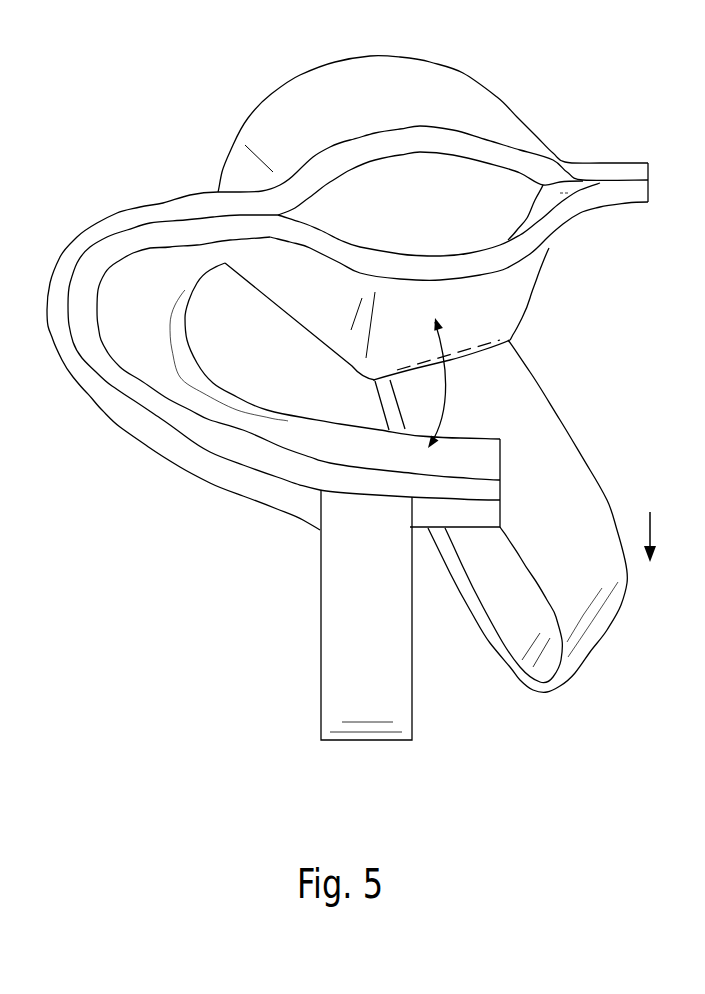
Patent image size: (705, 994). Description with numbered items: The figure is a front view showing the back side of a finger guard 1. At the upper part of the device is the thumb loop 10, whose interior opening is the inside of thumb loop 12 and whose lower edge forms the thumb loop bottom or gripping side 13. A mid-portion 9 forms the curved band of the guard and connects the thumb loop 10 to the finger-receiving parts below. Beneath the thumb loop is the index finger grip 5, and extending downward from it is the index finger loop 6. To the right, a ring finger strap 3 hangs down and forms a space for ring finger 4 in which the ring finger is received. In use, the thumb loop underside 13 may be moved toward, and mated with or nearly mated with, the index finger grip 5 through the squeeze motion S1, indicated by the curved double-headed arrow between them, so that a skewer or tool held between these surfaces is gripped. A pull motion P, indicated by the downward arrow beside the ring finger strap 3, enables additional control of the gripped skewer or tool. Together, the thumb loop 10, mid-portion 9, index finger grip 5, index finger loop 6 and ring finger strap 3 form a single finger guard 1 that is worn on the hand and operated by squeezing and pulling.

The finger guard 1 is at (596, 93).
The ring finger strap 3 is at (573, 588).
The space for ring finger 4 is at (496, 624).
The index finger grip 5 is at (347, 443).
The index finger loop 6 is at (334, 666).
The mid-portion 9 is at (112, 215).
The thumb loop 10 is at (375, 100).
The inside of thumb loop 12 is at (505, 227).
The thumb loop bottom or gripping side 13 is at (407, 330).
The squeeze motion S1 is at (447, 395).
The pull motion P is at (650, 523).